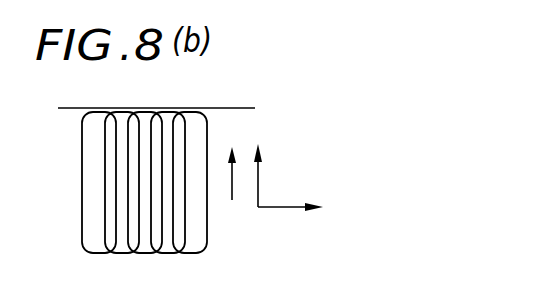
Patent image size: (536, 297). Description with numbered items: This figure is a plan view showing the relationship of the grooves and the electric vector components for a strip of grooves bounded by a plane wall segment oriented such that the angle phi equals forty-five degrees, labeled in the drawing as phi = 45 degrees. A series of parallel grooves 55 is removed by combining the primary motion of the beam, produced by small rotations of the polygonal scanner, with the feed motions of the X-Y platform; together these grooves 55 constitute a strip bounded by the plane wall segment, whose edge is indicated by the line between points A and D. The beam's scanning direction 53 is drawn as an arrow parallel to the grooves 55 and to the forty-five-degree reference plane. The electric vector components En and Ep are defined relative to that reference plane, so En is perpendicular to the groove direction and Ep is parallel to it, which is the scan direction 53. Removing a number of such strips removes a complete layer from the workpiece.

The scanning direction 53 is at (232, 200).
The parallel grooves 55 is at (83, 203).
The angle phi = 45 degrees 45 is at (152, 91).
The reference line endpoint A is at (95, 110).
The reference line endpoint D is at (217, 107).
The electric vector component Ep is at (270, 168).
The electric vector component En is at (305, 212).